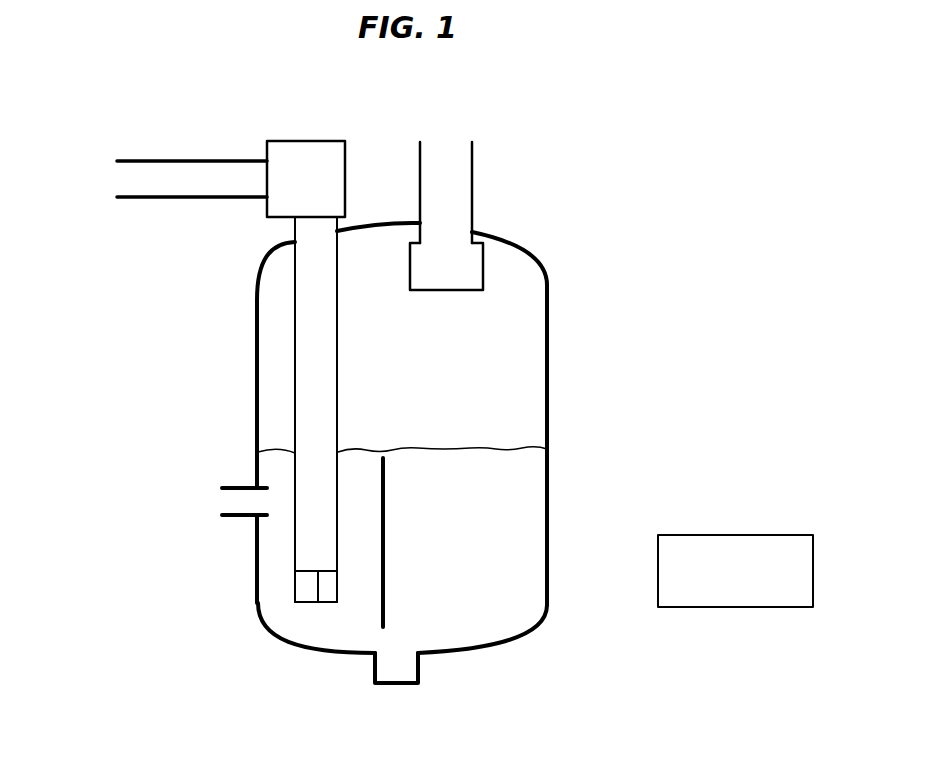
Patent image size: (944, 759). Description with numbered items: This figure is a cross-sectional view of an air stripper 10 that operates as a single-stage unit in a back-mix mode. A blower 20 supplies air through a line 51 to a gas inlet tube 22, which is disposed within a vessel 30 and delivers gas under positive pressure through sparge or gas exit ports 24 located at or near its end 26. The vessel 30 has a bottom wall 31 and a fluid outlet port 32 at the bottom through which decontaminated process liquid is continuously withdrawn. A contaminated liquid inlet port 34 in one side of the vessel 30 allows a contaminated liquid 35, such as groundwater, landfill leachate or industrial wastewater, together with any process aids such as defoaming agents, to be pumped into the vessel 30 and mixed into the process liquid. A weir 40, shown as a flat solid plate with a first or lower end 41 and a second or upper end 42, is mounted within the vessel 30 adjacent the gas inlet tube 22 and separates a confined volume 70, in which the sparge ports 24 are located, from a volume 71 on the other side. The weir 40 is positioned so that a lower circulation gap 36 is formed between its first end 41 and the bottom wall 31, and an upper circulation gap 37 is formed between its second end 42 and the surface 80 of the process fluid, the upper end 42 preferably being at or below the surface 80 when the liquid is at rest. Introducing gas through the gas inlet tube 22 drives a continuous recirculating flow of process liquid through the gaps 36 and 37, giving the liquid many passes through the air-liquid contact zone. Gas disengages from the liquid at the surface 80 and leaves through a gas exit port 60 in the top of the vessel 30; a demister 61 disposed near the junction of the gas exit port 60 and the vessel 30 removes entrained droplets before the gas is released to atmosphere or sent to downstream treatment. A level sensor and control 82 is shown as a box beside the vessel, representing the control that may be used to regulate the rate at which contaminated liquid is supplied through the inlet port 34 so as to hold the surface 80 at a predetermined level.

The air stripper 10 is at (240, 422).
The blower 20 is at (278, 201).
The gas inlet tube 22 is at (308, 333).
The gas exit ports 24 is at (297, 590).
The end 26 is at (303, 605).
The vessel 30 is at (548, 293).
The bottom wall 31 is at (470, 648).
The fluid outlet port 32 is at (398, 667).
The contaminated liquid inlet port 34 is at (222, 515).
The contaminated liquid 35 is at (533, 466).
The lower circulation gap 36 is at (383, 630).
The upper circulation gap 37 is at (370, 445).
The weir 40 is at (385, 565).
The first end 41 is at (383, 628).
The second end 42 is at (383, 458).
The line 51 is at (122, 200).
The gas exit port 60 is at (447, 173).
The demister 61 is at (468, 267).
The confined volume 70 is at (365, 608).
The volume 71 is at (527, 522).
The surface 80 is at (507, 445).
The level sensor and control 82 is at (751, 535).